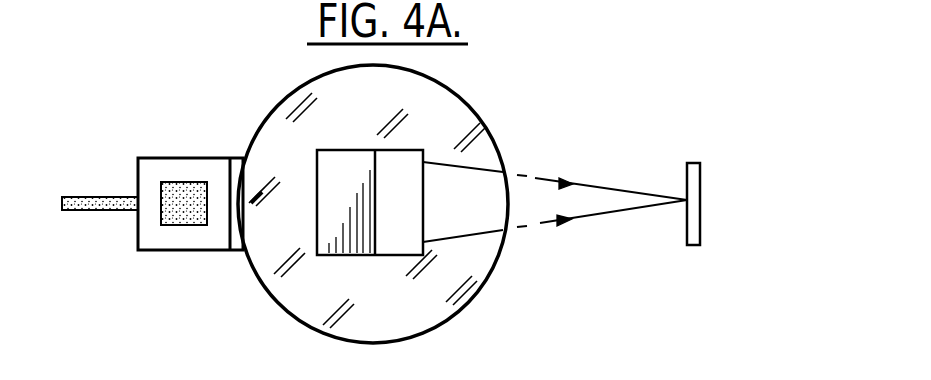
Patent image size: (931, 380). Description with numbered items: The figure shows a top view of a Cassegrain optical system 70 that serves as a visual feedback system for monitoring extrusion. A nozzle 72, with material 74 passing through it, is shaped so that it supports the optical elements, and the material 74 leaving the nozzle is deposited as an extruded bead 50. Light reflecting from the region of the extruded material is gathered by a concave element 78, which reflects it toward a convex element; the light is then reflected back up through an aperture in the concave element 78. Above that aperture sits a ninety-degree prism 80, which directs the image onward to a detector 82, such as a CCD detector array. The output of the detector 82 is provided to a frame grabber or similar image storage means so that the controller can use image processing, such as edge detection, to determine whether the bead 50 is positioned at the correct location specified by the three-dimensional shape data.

The bead 50 is at (85, 212).
The Cassegrain optical system 70 is at (365, 195).
The nozzle 72 is at (173, 198).
The material 74 is at (178, 223).
The concave element 78 is at (477, 110).
The prism 80 is at (347, 150).
The detector 82 is at (702, 220).